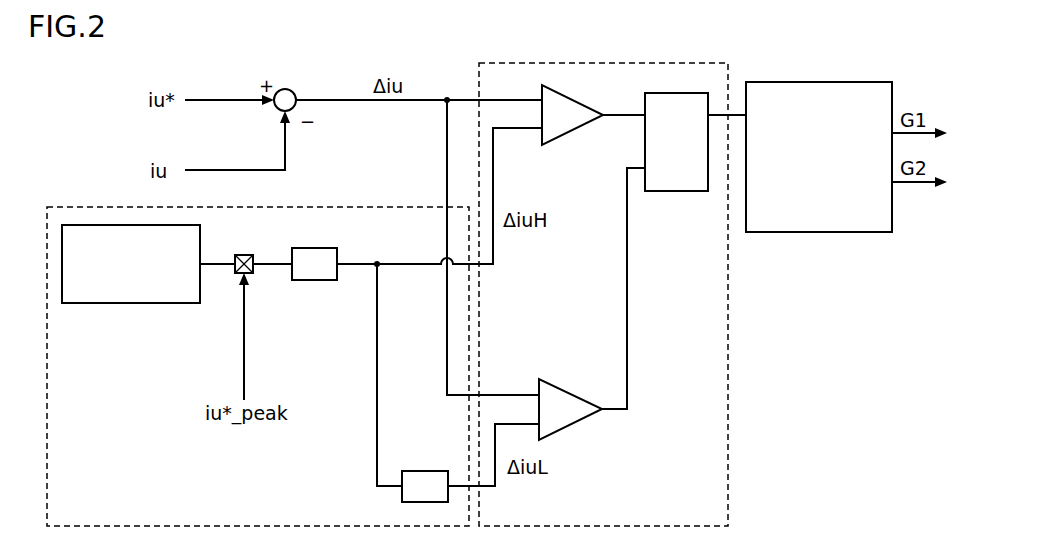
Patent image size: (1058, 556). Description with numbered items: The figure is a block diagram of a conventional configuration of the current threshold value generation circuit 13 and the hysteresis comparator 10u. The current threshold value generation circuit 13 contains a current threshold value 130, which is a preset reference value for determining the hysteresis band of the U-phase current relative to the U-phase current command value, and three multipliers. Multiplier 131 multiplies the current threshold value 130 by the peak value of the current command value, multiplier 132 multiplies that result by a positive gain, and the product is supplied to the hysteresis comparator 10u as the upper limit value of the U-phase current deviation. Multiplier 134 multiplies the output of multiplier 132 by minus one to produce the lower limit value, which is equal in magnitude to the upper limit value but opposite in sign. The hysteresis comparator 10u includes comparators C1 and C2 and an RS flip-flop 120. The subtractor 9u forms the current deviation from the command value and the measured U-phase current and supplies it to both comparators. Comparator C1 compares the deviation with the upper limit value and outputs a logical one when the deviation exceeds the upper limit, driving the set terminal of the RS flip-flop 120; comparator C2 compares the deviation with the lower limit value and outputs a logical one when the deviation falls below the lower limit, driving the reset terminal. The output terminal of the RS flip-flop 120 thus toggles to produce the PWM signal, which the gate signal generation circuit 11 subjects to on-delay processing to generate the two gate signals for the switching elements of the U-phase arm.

The subtractor 9u is at (293, 91).
The hysteresis comparator 10u is at (590, 62).
The gate signal generation circuit 11 is at (862, 82).
The current threshold value generation circuit 13 is at (365, 207).
The RS flip-flop 120 is at (665, 93).
The current threshold value 130 is at (153, 303).
The multiplier 131 is at (245, 254).
The multiplier 132 is at (312, 280).
The multiplier 134 is at (423, 470).
The comparator C1 is at (577, 95).
The comparator C2 is at (577, 390).